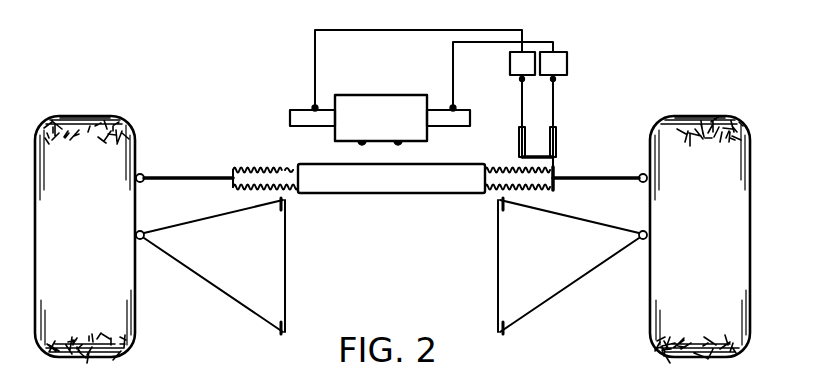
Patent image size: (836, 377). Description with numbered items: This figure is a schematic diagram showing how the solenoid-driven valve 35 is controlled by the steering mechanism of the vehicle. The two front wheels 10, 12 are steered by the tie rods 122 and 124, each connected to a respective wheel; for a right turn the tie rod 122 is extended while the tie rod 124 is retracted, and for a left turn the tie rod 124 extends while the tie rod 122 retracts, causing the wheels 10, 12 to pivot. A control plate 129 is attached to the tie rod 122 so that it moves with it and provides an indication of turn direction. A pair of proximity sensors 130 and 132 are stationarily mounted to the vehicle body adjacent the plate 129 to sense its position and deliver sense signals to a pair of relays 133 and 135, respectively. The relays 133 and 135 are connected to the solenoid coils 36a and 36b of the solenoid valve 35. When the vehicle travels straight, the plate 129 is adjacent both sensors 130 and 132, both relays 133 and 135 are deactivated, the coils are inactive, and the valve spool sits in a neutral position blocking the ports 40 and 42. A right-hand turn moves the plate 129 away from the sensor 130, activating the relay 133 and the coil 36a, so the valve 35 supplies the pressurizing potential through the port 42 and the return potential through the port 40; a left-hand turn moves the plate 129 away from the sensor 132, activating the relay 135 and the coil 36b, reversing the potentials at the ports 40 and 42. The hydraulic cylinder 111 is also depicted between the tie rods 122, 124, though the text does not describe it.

The front wheel 10 is at (703, 116).
The front wheel 12 is at (106, 116).
The solenoid valve 35 is at (393, 95).
The solenoid coil 36a is at (312, 126).
The solenoid coil 36b is at (453, 126).
The port 40 is at (398, 144).
The port 42 is at (360, 144).
The hydraulic cylinder 111 is at (415, 194).
The tie rod 122 is at (580, 181).
The tie rod 124 is at (190, 178).
The control plate 129 is at (555, 172).
The proximity sensor 130 is at (519, 129).
The proximity sensor 132 is at (557, 130).
The relay 133 is at (509, 64).
The relay 135 is at (567, 60).